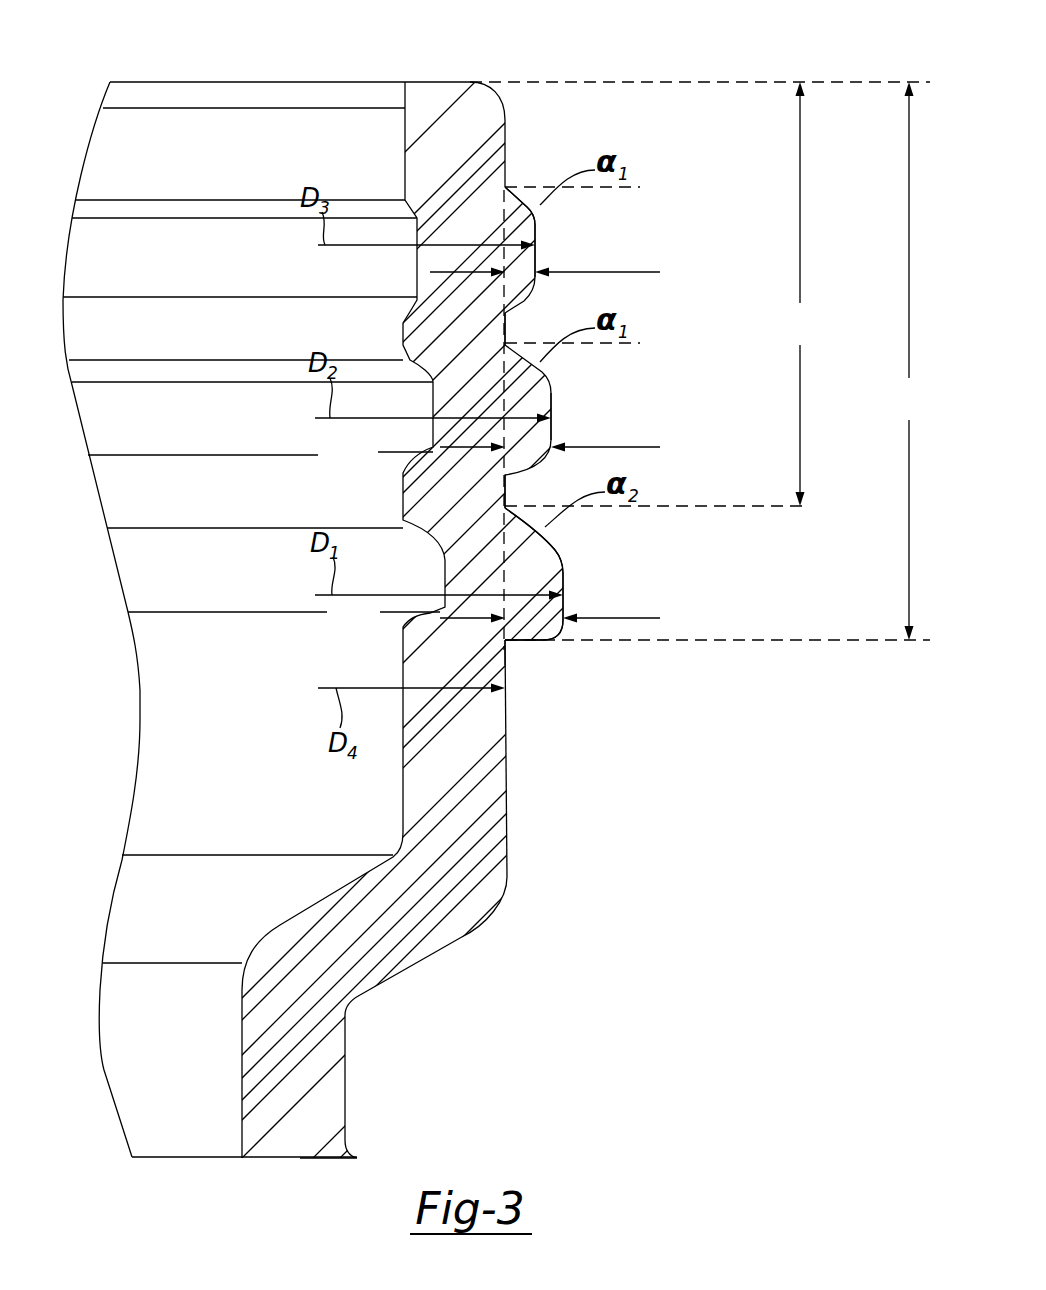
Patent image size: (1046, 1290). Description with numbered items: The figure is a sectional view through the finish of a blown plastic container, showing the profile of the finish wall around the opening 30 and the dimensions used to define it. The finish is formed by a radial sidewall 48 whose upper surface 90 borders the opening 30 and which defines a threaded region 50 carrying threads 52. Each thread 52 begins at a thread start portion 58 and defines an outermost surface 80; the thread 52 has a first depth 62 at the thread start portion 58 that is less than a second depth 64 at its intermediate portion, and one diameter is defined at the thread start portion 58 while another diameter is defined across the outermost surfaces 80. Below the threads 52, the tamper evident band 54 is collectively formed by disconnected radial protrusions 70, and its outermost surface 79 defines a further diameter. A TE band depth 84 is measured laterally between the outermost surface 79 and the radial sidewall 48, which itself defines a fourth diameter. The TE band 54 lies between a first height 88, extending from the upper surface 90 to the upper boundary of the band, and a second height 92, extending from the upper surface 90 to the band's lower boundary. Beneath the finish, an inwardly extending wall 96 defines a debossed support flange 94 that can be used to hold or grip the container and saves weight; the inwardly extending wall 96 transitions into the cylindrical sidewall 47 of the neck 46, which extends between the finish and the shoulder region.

The opening 30 is at (218, 82).
The upper surface 90 is at (437, 82).
The threaded region 50 is at (580, 257).
The thread start portion 58 is at (537, 247).
The thread 52 is at (540, 287).
The outermost surface of the thread 80 is at (550, 397).
The tamper evident band 54 is at (555, 580).
The outermost surface of the TE band 79 is at (550, 572).
The radial protrusion 70 is at (563, 583).
The first depth 62 is at (447, 285).
The second depth 64 is at (447, 450).
The TE band depth 84 is at (447, 625).
The first height 88 is at (700, 294).
The second height 92 is at (717, 361).
The radial sidewall 48 is at (508, 817).
The inwardly extending wall 96 is at (435, 955).
The debossed support flange 94 is at (432, 1007).
The neck 46 is at (362, 1082).
The cylindrical sidewall 47 is at (348, 1122).